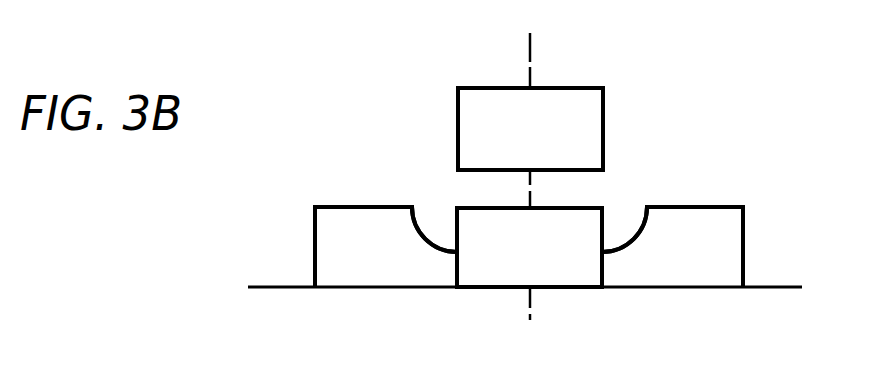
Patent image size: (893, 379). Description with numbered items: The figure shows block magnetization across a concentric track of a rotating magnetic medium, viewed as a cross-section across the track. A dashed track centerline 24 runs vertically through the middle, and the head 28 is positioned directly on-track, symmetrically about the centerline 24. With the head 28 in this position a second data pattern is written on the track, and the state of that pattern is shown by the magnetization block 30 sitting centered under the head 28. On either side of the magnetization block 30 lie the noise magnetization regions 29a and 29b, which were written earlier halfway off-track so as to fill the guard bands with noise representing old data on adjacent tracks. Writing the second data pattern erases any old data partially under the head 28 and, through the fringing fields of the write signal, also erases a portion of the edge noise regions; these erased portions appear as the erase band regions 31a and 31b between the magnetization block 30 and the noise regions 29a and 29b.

The track centerline 24 is at (528, 56).
The head 28 is at (603, 120).
The magnetization block 30 is at (557, 280).
The noise magnetization region 29a is at (315, 228).
The noise magnetization region 29b is at (743, 252).
The erase band region 31a is at (437, 231).
The erase band region 31b is at (615, 229).